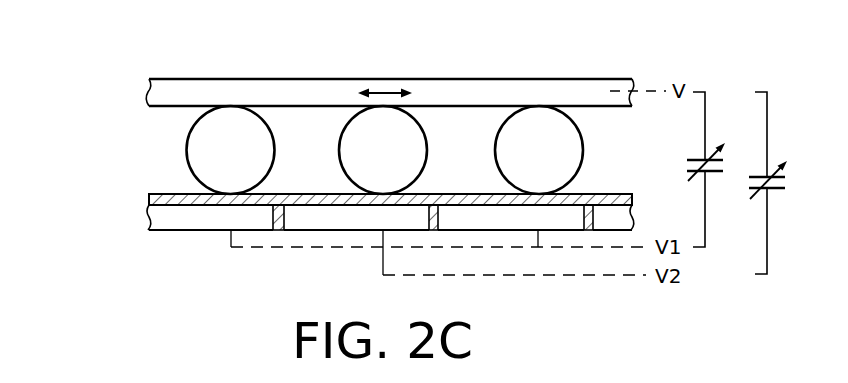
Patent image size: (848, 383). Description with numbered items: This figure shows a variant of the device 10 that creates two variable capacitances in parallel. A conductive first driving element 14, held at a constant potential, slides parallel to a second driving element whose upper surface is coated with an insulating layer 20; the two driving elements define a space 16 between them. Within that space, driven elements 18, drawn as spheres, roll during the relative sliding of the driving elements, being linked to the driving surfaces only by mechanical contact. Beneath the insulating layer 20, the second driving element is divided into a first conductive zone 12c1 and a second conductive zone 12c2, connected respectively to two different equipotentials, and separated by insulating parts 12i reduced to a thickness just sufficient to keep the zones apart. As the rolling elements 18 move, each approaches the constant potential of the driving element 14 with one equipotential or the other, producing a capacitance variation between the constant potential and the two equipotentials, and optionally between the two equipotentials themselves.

The device 10 is at (133, 122).
The driving element 14 is at (605, 85).
The space 16 is at (477, 138).
The driven element 18 is at (239, 128).
The insulating layer 20 is at (175, 202).
The conductive zone 12c1 is at (222, 222).
The conductive zone 12c2 is at (378, 221).
The insulating part 12i is at (270, 229).